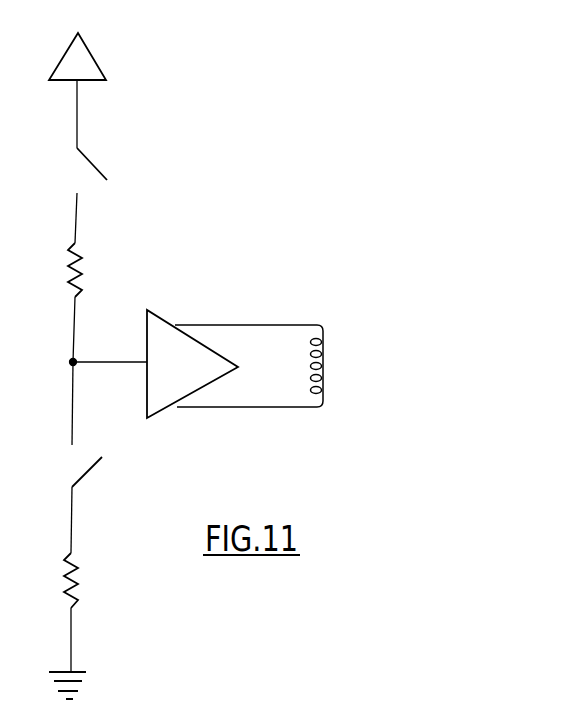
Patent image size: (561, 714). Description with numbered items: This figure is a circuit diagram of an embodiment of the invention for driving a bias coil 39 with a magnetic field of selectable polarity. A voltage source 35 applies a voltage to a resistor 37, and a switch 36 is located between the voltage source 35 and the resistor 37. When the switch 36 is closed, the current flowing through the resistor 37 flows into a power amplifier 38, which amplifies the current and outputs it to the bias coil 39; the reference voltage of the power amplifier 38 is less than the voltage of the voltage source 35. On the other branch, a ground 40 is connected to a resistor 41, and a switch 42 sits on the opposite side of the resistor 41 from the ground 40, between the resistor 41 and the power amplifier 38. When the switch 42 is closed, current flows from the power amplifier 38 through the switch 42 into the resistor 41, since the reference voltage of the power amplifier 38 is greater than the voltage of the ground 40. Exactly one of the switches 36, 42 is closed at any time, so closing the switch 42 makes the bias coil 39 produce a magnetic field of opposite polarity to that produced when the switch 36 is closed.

The voltage source 35 is at (95, 52).
The switch 36 is at (95, 165).
The resistor 37 is at (83, 269).
The power amplifier 38 is at (161, 310).
The bias coil 39 is at (324, 358).
The ground 40 is at (82, 669).
The resistor 41 is at (80, 579).
The switch 42 is at (89, 470).